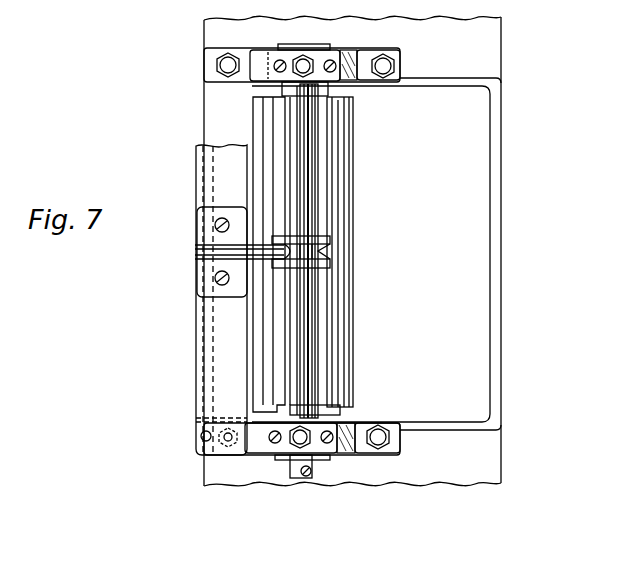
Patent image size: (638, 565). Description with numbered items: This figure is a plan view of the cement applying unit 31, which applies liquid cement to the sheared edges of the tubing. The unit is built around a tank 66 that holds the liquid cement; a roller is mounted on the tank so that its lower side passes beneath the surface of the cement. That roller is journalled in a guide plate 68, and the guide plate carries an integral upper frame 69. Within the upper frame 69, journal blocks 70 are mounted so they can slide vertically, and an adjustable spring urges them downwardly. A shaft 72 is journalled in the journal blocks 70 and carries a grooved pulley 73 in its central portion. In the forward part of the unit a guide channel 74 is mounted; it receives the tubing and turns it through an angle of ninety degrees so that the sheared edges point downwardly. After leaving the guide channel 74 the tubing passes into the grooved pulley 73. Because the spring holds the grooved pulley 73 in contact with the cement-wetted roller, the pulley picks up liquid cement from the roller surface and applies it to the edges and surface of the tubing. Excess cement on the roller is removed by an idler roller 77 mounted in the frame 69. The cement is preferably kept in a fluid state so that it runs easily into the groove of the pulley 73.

The cement applying unit 31 is at (186, 373).
The tank 66 is at (477, 368).
The guide plate 68 is at (347, 60).
The upper frame 69 is at (272, 453).
The journal blocks 70 is at (318, 458).
The shaft 72 is at (298, 353).
The grooved pulley 73 is at (328, 266).
The guide channel 74 is at (204, 260).
The idler roller 77 is at (265, 386).